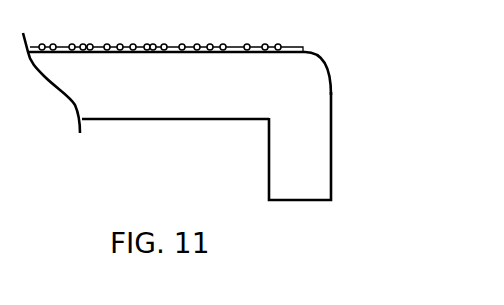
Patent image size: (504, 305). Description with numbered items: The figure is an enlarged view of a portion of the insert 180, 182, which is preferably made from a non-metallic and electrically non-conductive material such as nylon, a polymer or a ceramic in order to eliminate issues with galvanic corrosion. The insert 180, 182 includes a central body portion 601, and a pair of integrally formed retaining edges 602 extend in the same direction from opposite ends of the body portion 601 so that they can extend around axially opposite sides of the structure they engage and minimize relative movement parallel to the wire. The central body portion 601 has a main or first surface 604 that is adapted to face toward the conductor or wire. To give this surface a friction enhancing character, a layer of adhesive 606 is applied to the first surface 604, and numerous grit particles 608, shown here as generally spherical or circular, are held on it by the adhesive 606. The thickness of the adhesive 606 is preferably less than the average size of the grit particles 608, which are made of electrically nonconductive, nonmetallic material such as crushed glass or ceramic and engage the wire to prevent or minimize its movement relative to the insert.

The insert 180 is at (193, 107).
The insert 182 is at (131, 161).
The central body portion 601 is at (183, 112).
The retaining edges 602 is at (304, 141).
The first surface 604 is at (306, 52).
The adhesive 606 is at (293, 48).
The grit particles 608 is at (42, 44).